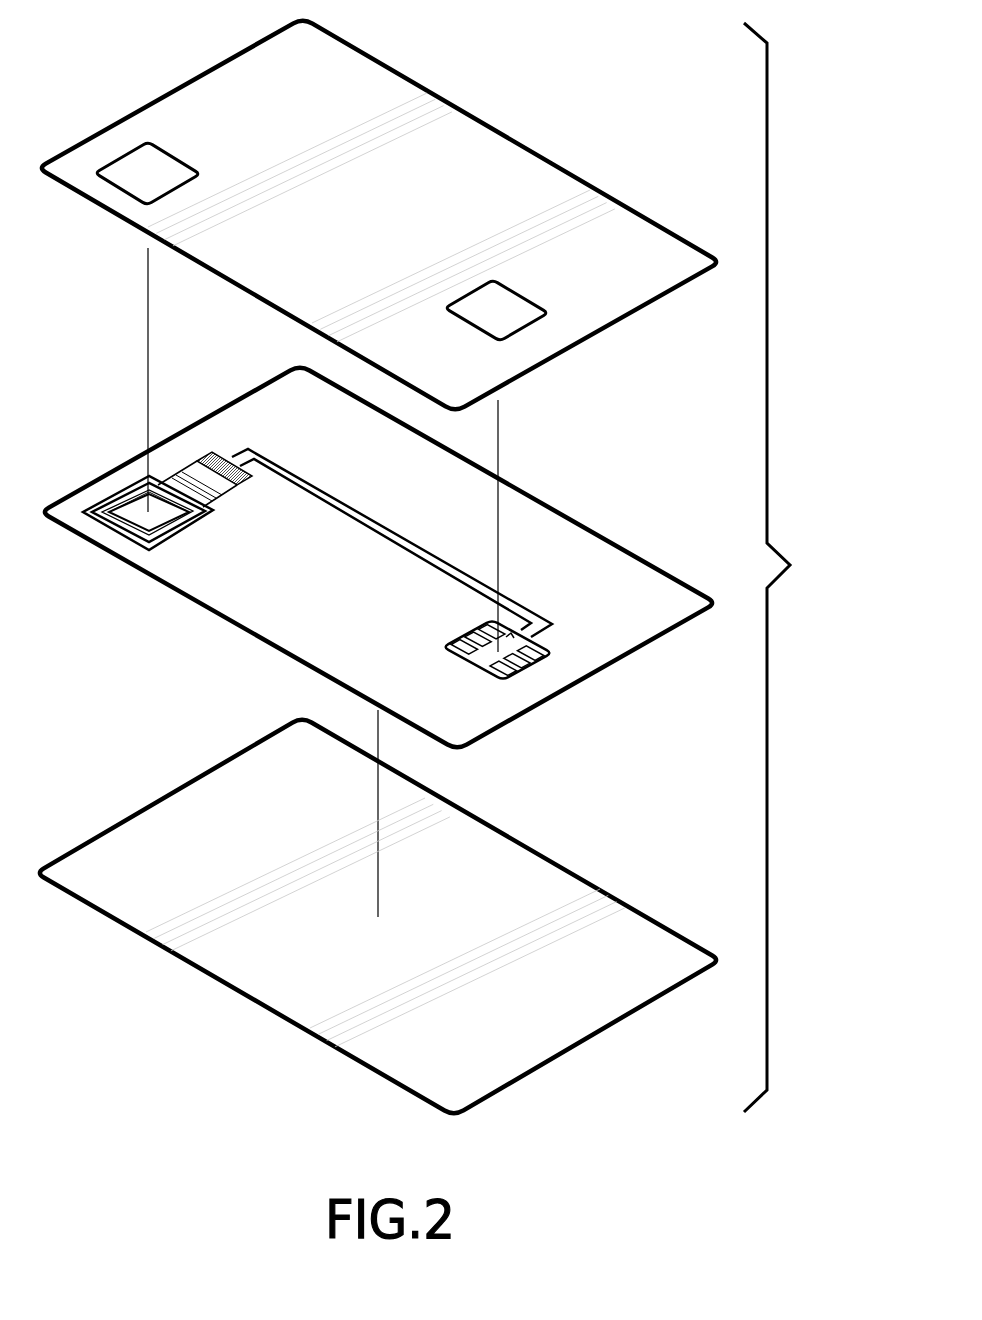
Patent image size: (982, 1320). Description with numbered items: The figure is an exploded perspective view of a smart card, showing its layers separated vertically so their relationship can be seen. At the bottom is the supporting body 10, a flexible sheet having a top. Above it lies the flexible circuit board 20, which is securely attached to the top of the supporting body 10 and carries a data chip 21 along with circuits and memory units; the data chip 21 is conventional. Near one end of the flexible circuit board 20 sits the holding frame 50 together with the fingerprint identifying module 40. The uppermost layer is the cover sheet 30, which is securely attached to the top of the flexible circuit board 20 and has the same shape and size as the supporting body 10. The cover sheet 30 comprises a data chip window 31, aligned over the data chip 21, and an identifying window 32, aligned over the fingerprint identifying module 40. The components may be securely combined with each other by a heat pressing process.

The supporting body 10 is at (633, 938).
The flexible circuit board 20 is at (598, 525).
The data chip 21 is at (525, 673).
The cover sheet 30 is at (499, 125).
The data chip window 31 is at (531, 325).
The identifying window 32 is at (131, 163).
The fingerprint identifying module 40 is at (118, 502).
The holding frame 50 is at (127, 537).